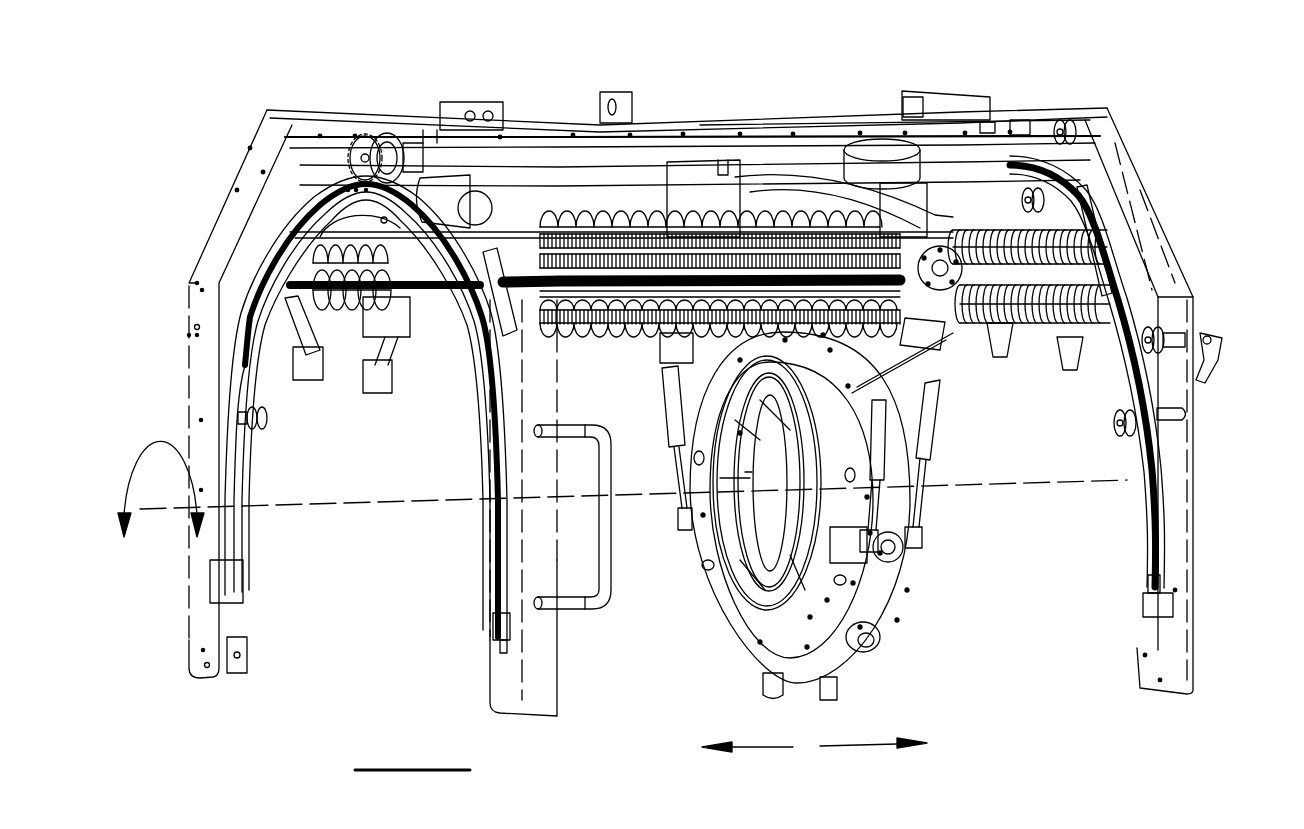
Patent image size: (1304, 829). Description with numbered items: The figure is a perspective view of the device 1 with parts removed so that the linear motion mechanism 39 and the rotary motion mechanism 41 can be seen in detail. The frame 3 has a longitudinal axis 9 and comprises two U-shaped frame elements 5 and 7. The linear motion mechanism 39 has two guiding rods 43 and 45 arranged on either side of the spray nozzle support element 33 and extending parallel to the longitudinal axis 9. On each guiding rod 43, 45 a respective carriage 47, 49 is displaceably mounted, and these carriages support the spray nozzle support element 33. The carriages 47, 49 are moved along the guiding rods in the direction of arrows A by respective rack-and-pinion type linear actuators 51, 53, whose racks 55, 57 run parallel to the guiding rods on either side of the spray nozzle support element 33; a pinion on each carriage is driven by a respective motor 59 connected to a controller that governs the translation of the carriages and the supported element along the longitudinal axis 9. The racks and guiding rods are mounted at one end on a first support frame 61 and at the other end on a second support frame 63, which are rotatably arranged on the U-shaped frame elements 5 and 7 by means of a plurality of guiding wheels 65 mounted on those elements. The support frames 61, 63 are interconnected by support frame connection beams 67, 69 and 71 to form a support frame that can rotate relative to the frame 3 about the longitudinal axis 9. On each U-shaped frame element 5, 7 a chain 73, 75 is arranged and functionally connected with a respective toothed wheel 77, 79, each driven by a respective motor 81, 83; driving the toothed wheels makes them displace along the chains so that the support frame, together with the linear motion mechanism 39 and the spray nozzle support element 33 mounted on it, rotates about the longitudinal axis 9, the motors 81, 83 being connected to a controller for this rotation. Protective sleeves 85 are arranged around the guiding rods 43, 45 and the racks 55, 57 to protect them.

The device 1 is at (1168, 104).
The frame 3 is at (1090, 68).
The U-shaped frame element 5 is at (200, 366).
The U-shaped frame element 7 is at (1160, 270).
The longitudinal axis 9 is at (330, 505).
The spray nozzle support element 33 is at (880, 605).
The linear motion mechanism 39 is at (643, 355).
The rotary motion mechanism 41 is at (349, 97).
The guiding rod 43 is at (588, 332).
The guiding rod 45 is at (560, 203).
The carriage 47 is at (930, 337).
The carriage 49 is at (690, 290).
The rack-and-pinion type linear actuator 51 is at (953, 430).
The rack-and-pinion type linear actuator 53 is at (654, 175).
The rack 55 is at (572, 345).
The rack 57 is at (323, 333).
The motor 59 is at (905, 205).
The first support frame 61 is at (248, 458).
The second support frame 63 is at (1130, 360).
The guiding wheel 65 is at (1040, 203).
The support frame connection beam 67 is at (510, 165).
The support frame connection beam 69 is at (347, 150).
The support frame connection beam 71 is at (810, 118).
The chain 73 is at (500, 572).
The chain 75 is at (1150, 555).
The toothed wheel 77 is at (366, 138).
The toothed wheel 79 is at (1020, 120).
The motor 81 is at (410, 150).
The motor 83 is at (987, 122).
The protective sleeve 85 is at (1040, 325).